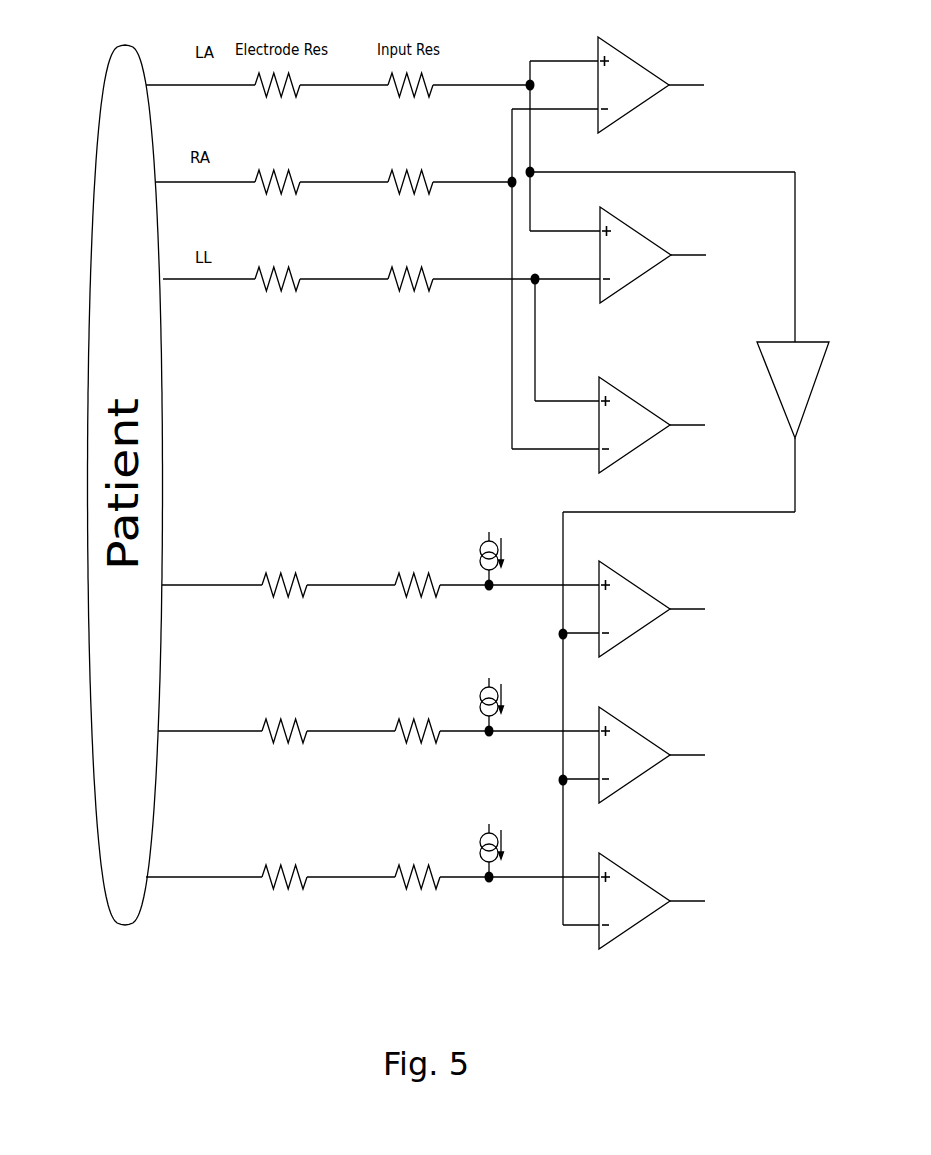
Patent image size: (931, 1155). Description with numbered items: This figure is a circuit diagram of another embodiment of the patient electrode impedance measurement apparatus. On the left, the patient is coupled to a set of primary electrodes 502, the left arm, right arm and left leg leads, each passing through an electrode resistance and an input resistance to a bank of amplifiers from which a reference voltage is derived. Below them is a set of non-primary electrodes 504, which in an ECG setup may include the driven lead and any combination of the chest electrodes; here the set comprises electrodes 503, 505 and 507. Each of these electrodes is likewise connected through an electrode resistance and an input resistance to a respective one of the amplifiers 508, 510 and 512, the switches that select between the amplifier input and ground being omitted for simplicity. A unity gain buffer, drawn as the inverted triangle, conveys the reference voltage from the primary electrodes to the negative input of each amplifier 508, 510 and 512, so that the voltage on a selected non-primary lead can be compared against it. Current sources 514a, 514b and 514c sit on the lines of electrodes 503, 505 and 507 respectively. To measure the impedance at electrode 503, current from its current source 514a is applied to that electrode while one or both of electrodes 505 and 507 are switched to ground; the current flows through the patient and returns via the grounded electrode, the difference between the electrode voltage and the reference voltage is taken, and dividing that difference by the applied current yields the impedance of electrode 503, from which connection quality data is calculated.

The first set of electrodes (LA, RA, LL) 502 is at (72, 62).
The electrode 503 is at (170, 583).
The set of non-primary electrodes 504 is at (83, 570).
The electrode 505 is at (168, 727).
The electrode 507 is at (148, 871).
The amplifier 508 is at (816, 399).
The amplifier 510 is at (653, 736).
The amplifier 512 is at (632, 881).
The current source 514a is at (472, 549).
The current source 514b is at (472, 695).
The current source 514c is at (472, 841).